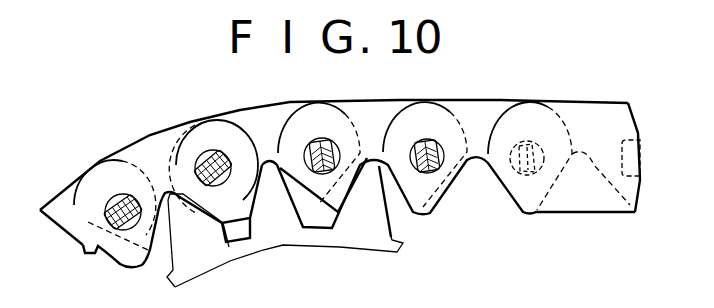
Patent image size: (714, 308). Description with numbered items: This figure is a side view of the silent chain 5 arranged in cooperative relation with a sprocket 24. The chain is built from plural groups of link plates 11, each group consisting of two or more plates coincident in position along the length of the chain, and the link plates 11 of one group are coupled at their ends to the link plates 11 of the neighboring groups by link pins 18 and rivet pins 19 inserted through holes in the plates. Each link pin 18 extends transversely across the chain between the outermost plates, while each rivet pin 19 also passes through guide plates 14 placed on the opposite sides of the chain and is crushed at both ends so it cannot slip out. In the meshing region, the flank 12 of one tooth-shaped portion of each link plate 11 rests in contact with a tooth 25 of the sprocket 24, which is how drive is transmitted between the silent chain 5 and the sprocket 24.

The silent chain 5 is at (574, 90).
The link plate 11 is at (141, 143).
The flank 12 is at (119, 264).
The guide plate 14 is at (581, 195).
The link pin 18 is at (122, 196).
The rivet pin 19 is at (110, 211).
The sprocket 24 is at (342, 247).
The tooth 25 is at (188, 233).